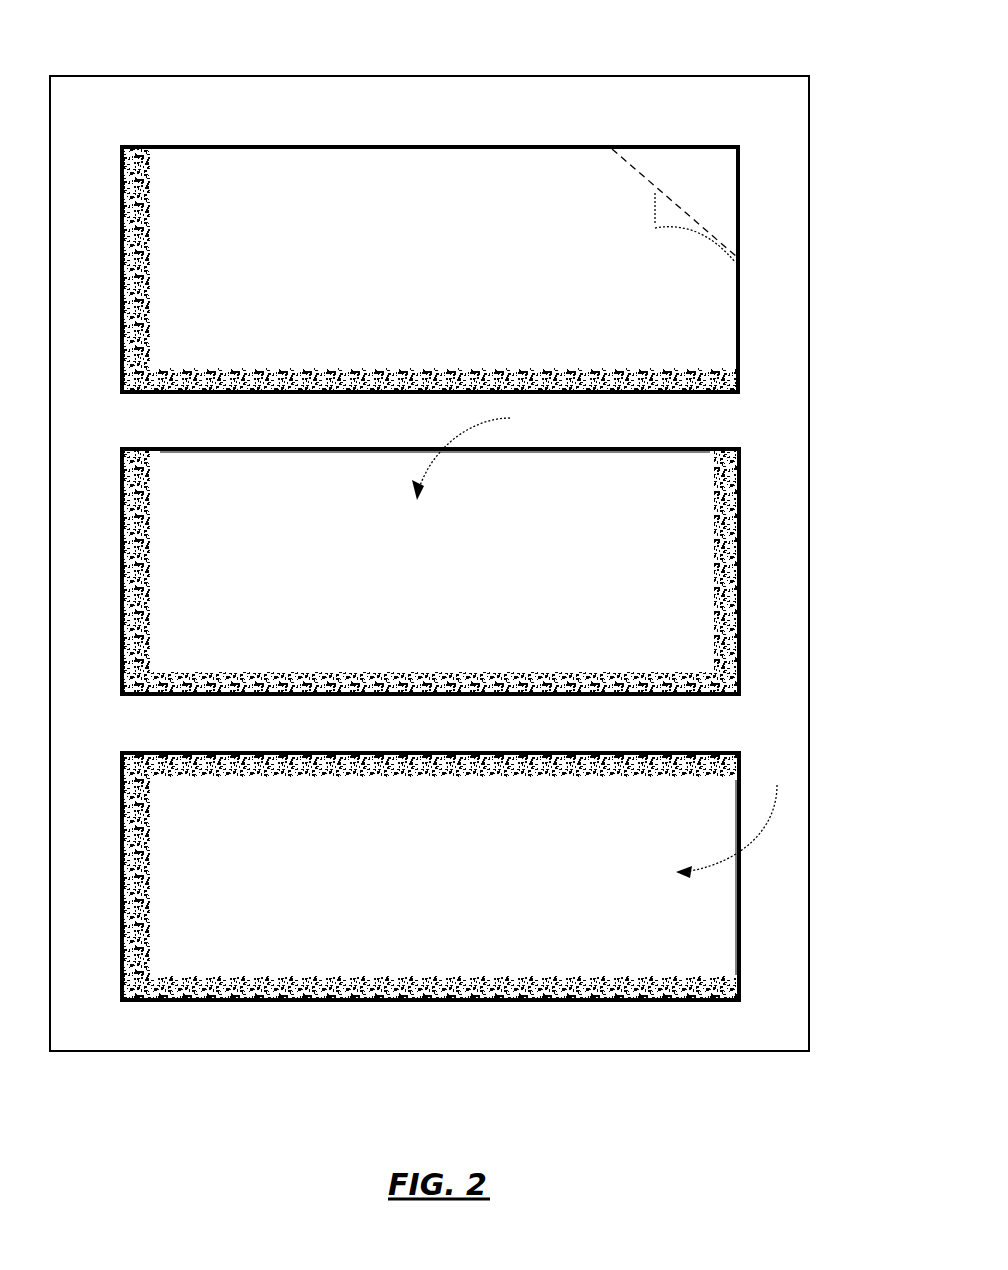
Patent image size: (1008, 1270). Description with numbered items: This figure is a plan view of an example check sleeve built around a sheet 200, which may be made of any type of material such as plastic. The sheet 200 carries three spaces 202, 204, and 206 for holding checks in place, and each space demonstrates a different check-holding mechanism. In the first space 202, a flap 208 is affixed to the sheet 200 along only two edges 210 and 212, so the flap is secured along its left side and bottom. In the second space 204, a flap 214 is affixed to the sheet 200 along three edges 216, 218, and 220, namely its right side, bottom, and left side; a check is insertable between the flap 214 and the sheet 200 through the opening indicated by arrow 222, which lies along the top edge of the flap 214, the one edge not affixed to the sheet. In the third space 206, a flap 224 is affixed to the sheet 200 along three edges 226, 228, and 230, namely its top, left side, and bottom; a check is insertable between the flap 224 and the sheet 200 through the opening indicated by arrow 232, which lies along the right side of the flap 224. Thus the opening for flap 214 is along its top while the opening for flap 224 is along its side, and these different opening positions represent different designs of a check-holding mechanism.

The sheet 200 is at (565, 61).
The space 202 is at (757, 288).
The space 204 is at (748, 563).
The space 206 is at (748, 910).
The flap 208 is at (657, 207).
The edge 210 is at (326, 372).
The edge 212 is at (141, 280).
The flap 214 is at (592, 463).
The edge 216 is at (712, 562).
The edge 218 is at (345, 672).
The edge 220 is at (142, 592).
The arrow 222 is at (490, 457).
The flap 224 is at (712, 957).
The edge 226 is at (328, 773).
The edge 228 is at (143, 875).
The edge 230 is at (312, 964).
The arrow 232 is at (732, 815).